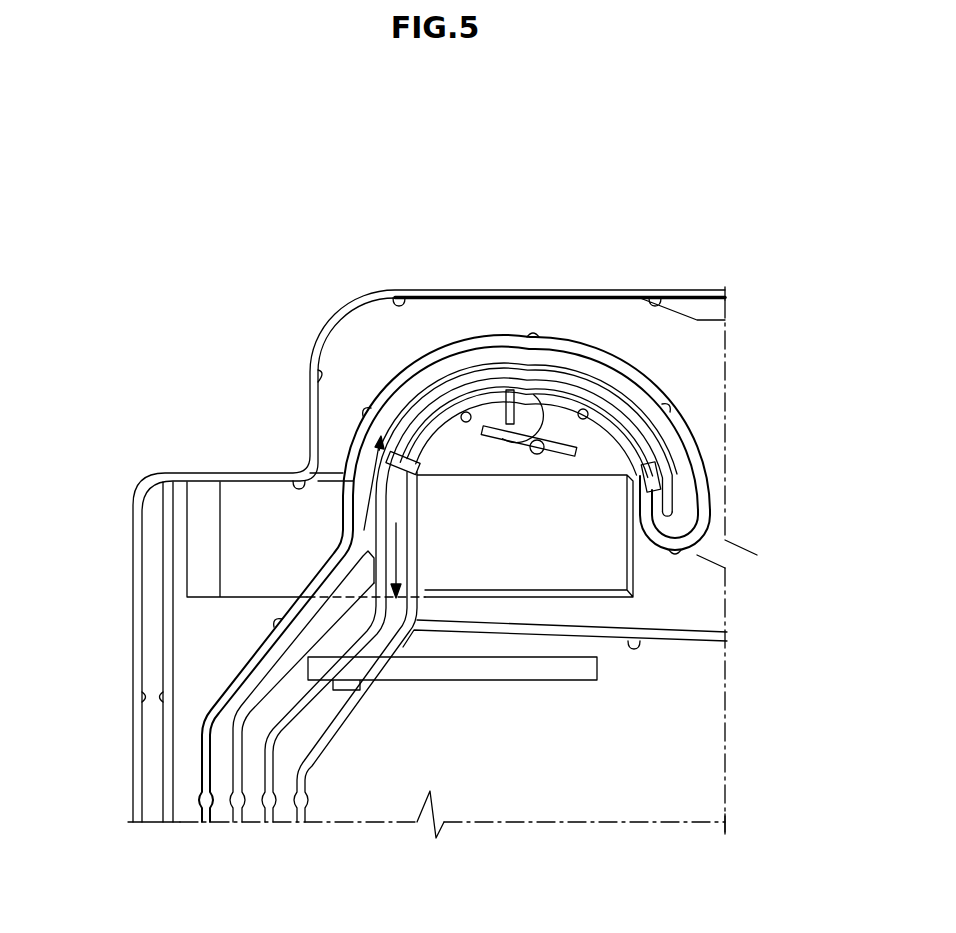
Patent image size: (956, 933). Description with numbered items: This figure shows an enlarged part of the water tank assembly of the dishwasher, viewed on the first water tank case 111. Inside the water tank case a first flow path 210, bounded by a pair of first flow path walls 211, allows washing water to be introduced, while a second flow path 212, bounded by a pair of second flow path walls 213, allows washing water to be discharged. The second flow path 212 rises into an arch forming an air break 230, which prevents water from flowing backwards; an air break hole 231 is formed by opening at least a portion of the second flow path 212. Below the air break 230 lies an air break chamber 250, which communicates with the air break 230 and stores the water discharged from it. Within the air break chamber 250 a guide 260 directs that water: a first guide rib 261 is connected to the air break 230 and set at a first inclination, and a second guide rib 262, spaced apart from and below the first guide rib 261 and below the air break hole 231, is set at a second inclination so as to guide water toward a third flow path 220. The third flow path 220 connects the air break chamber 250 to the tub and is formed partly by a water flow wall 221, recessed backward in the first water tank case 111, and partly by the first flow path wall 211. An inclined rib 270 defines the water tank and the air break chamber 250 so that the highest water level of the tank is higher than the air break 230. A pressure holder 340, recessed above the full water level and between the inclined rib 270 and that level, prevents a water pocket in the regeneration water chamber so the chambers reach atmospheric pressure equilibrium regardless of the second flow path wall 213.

The first water tank case 111 is at (692, 290).
The first flow path 210 is at (228, 738).
The first flow path wall 211 is at (640, 392).
The second flow path 212 is at (295, 768).
The second flow path wall 213 is at (302, 790).
The third flow path 220 is at (266, 532).
The water flow wall 221 is at (208, 506).
The air break 230 is at (566, 394).
The air break hole 231 is at (455, 422).
The air break chamber 250 is at (512, 544).
The guide 260 is at (565, 242).
The first guide rib 261 is at (507, 390).
The second guide rib 262 is at (543, 431).
The inclined rib 270 is at (700, 628).
The pressure holder 340 is at (493, 667).